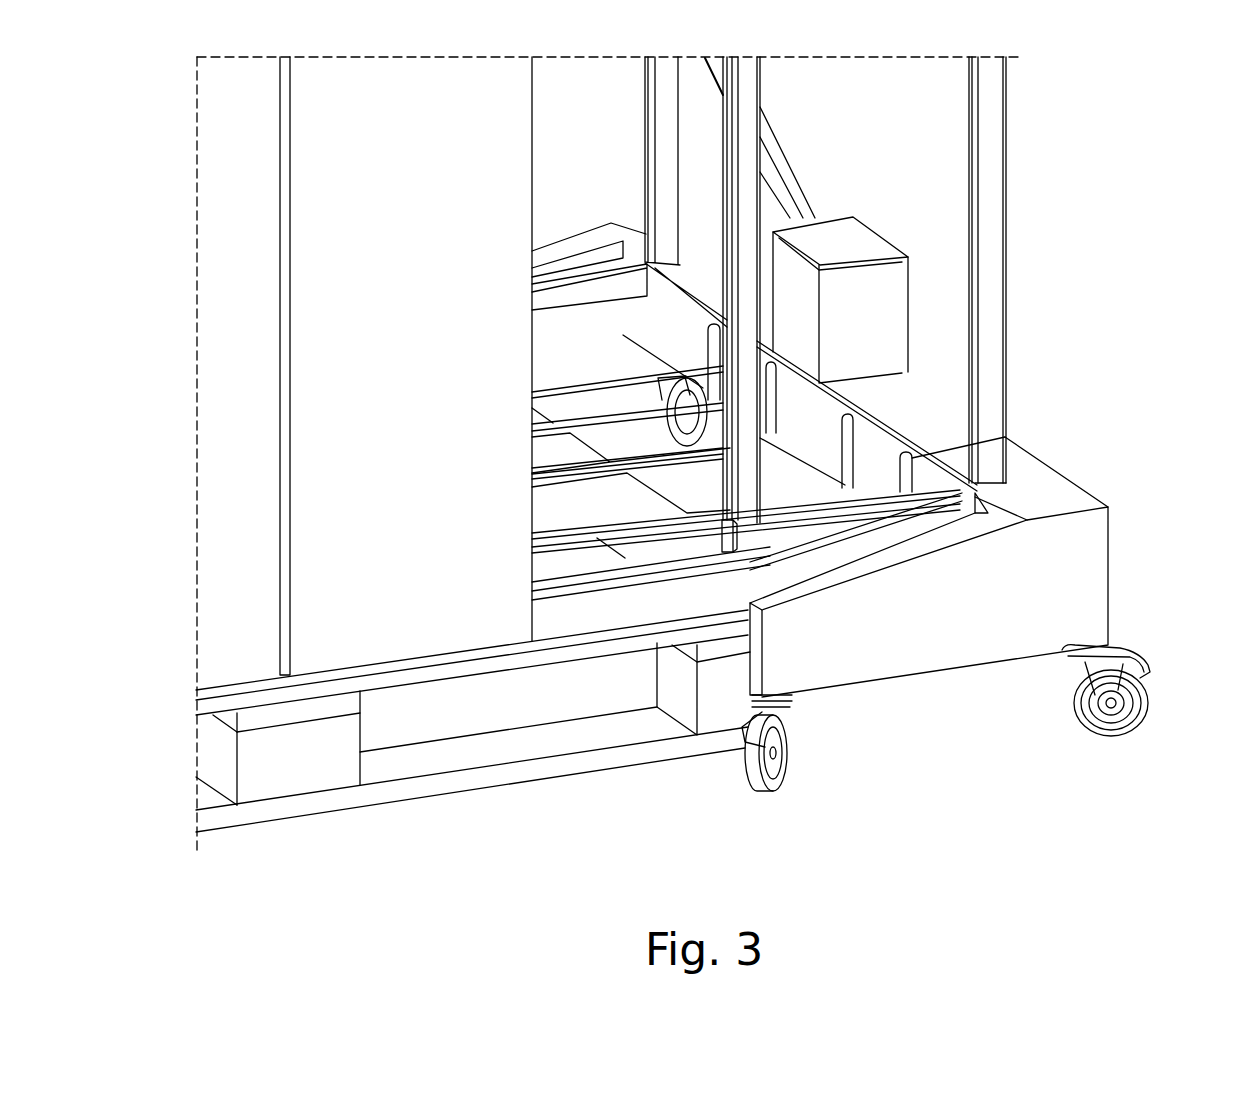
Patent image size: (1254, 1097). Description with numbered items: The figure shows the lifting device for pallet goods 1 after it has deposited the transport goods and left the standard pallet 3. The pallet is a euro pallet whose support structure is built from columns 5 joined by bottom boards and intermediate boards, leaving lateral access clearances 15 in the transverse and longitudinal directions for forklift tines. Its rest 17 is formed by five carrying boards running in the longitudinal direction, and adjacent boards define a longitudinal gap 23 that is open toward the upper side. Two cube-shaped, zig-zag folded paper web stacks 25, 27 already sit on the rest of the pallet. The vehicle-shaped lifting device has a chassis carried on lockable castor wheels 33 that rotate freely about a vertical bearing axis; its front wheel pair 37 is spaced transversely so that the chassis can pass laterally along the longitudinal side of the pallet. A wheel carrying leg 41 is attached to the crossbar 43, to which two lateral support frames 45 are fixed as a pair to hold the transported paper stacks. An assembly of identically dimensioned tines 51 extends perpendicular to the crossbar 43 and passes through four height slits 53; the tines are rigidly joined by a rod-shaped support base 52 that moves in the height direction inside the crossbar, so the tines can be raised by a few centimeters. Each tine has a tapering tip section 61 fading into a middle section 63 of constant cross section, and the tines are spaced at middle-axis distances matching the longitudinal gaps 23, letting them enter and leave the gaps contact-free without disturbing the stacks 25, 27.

The lifting device for pallet goods 1 is at (1072, 294).
The standard pallet 3 is at (378, 806).
The columns 5 is at (800, 705).
The lateral access clearances 15 is at (400, 718).
The rest 17 is at (598, 643).
The longitudinal gap 23 is at (549, 598).
The paper web stack 25 is at (253, 421).
The paper web stack 27 is at (441, 384).
The lockable wheels 33 is at (1153, 690).
The front wheel pair 37 is at (757, 787).
The wheel carrying leg 41 is at (1089, 577).
The crossbar 43 is at (1073, 475).
The lateral support frames 45 is at (988, 262).
The tines 51 is at (912, 480).
The support base 52 is at (775, 415).
The height slits 53 is at (855, 443).
The tapering tip section 61 is at (657, 610).
The middle section 63 is at (825, 567).